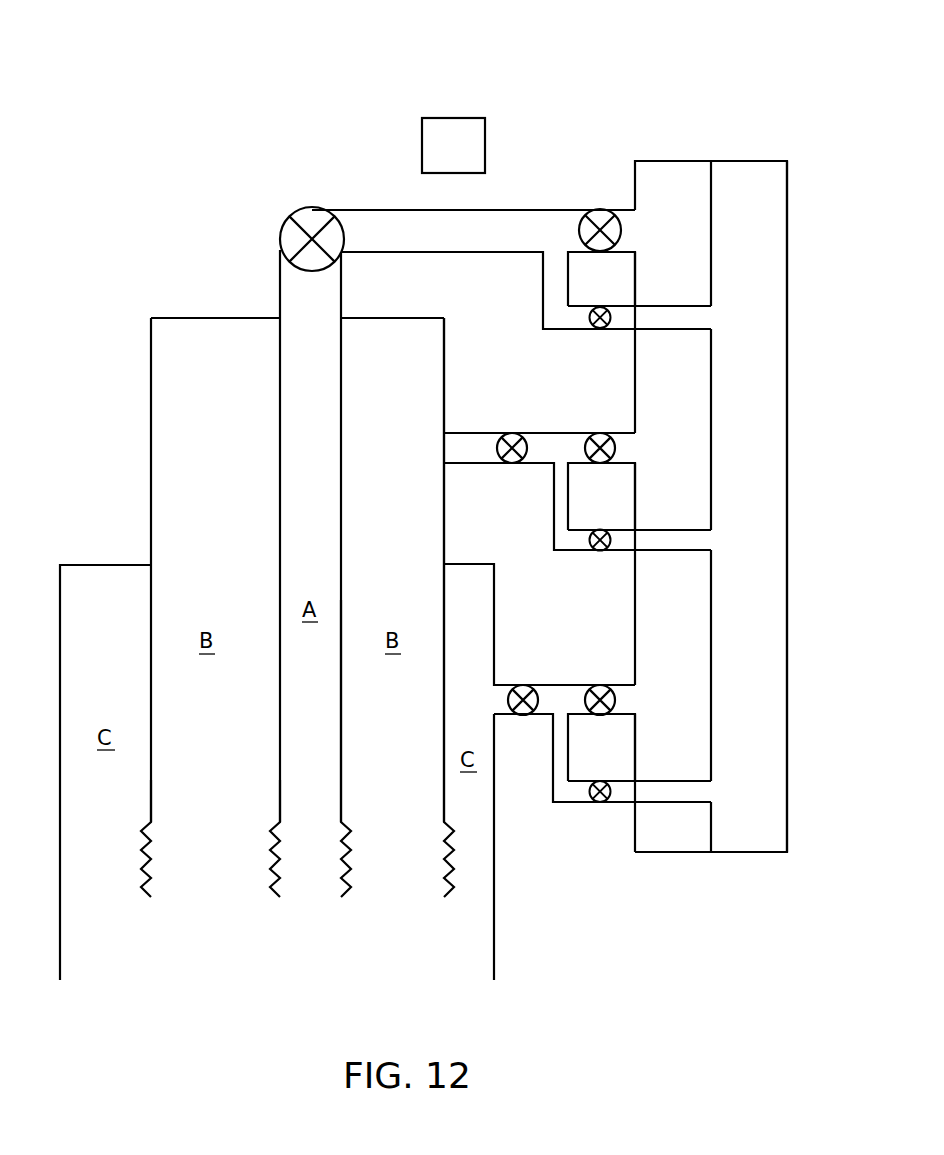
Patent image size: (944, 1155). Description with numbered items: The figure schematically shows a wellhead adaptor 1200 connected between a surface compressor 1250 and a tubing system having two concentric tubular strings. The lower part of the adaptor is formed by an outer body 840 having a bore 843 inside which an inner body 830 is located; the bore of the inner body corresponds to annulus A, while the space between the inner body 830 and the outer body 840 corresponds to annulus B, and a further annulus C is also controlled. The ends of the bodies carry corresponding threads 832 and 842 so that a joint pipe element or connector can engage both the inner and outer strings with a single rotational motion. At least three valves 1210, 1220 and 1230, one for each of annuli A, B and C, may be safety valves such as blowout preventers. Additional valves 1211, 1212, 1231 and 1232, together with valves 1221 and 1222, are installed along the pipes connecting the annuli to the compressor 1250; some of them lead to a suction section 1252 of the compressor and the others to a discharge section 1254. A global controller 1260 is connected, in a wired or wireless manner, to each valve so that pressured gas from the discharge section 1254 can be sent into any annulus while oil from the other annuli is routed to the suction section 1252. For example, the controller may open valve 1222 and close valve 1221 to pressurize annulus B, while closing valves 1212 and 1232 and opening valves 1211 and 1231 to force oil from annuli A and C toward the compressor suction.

The wellhead adaptor 1200 is at (700, 48).
The compressor 1250 is at (747, 148).
The discharge section 1254 is at (775, 280).
The suction section 1252 is at (703, 453).
The global controller 1260 is at (452, 118).
The valve 1230 is at (311, 207).
The valve 1231 is at (600, 208).
The valve 1232 is at (600, 330).
The valve 1220 is at (511, 432).
The valve 1221 is at (602, 466).
The valve 1222 is at (600, 553).
The valve 1210 is at (523, 718).
The valve 1211 is at (600, 684).
The valve 1212 is at (600, 803).
The bore 843 is at (412, 537).
The outer body 840 is at (444, 741).
The inner body 830 is at (341, 805).
The threads 832 is at (270, 873).
The threads 842 is at (141, 873).